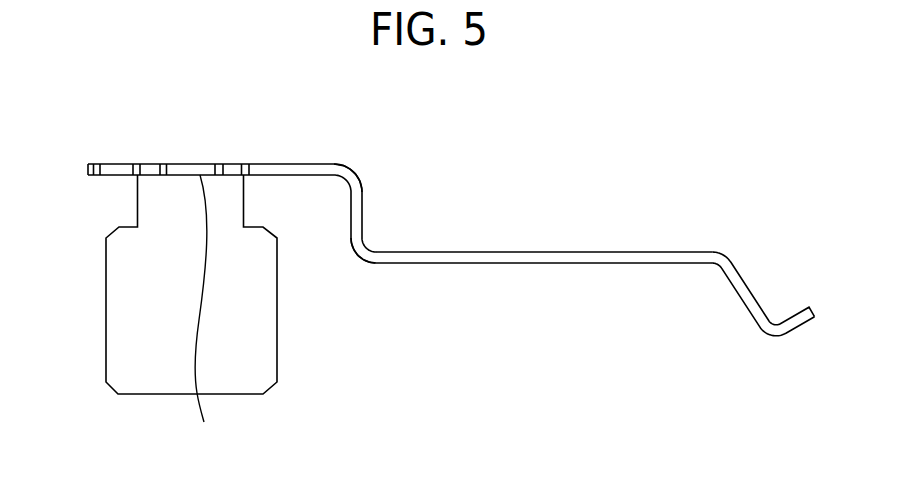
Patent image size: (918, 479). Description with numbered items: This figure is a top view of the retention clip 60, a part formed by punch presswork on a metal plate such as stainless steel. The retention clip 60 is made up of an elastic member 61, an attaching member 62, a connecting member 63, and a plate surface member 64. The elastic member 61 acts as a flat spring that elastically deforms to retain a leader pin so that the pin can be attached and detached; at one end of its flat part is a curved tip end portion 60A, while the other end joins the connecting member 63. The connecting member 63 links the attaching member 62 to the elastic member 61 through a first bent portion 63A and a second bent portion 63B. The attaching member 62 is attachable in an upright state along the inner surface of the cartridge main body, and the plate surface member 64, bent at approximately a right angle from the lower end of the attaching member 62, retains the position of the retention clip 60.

The retention clip 60 is at (576, 101).
The tip end portion 60A is at (805, 320).
The elastic member 61 is at (547, 253).
The attaching member 62 is at (206, 313).
The connecting member 63 is at (356, 213).
The first bent portion 63A is at (360, 262).
The second bent portion 63B is at (355, 163).
The plate surface member 64 is at (143, 380).